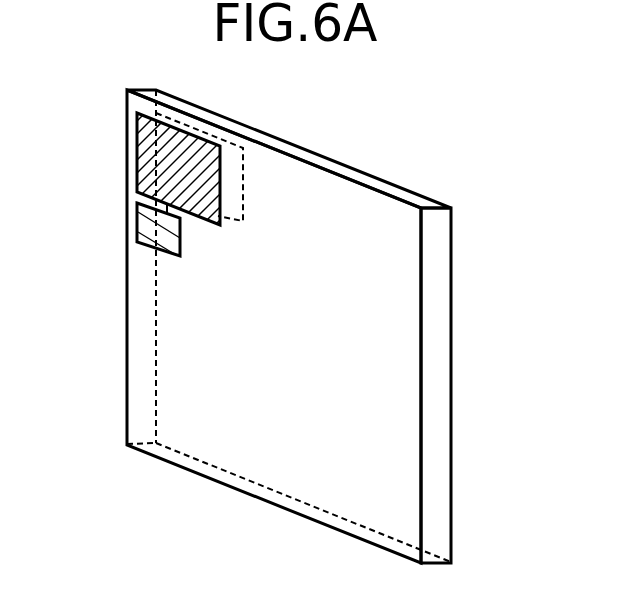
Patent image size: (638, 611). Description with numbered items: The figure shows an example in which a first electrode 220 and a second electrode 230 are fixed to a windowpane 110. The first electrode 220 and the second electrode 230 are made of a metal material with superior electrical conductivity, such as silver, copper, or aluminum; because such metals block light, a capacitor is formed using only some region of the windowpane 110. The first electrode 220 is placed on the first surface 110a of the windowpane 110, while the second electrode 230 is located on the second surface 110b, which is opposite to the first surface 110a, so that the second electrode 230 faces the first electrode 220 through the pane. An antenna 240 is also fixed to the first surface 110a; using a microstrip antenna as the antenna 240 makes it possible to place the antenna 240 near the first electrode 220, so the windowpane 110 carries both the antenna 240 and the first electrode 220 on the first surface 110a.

The windowpane 110 is at (331, 326).
The first surface 110a is at (398, 423).
The second surface 110b is at (410, 194).
The first electrode 220 is at (145, 143).
The second electrode 230 is at (243, 180).
The antenna 240 is at (145, 222).